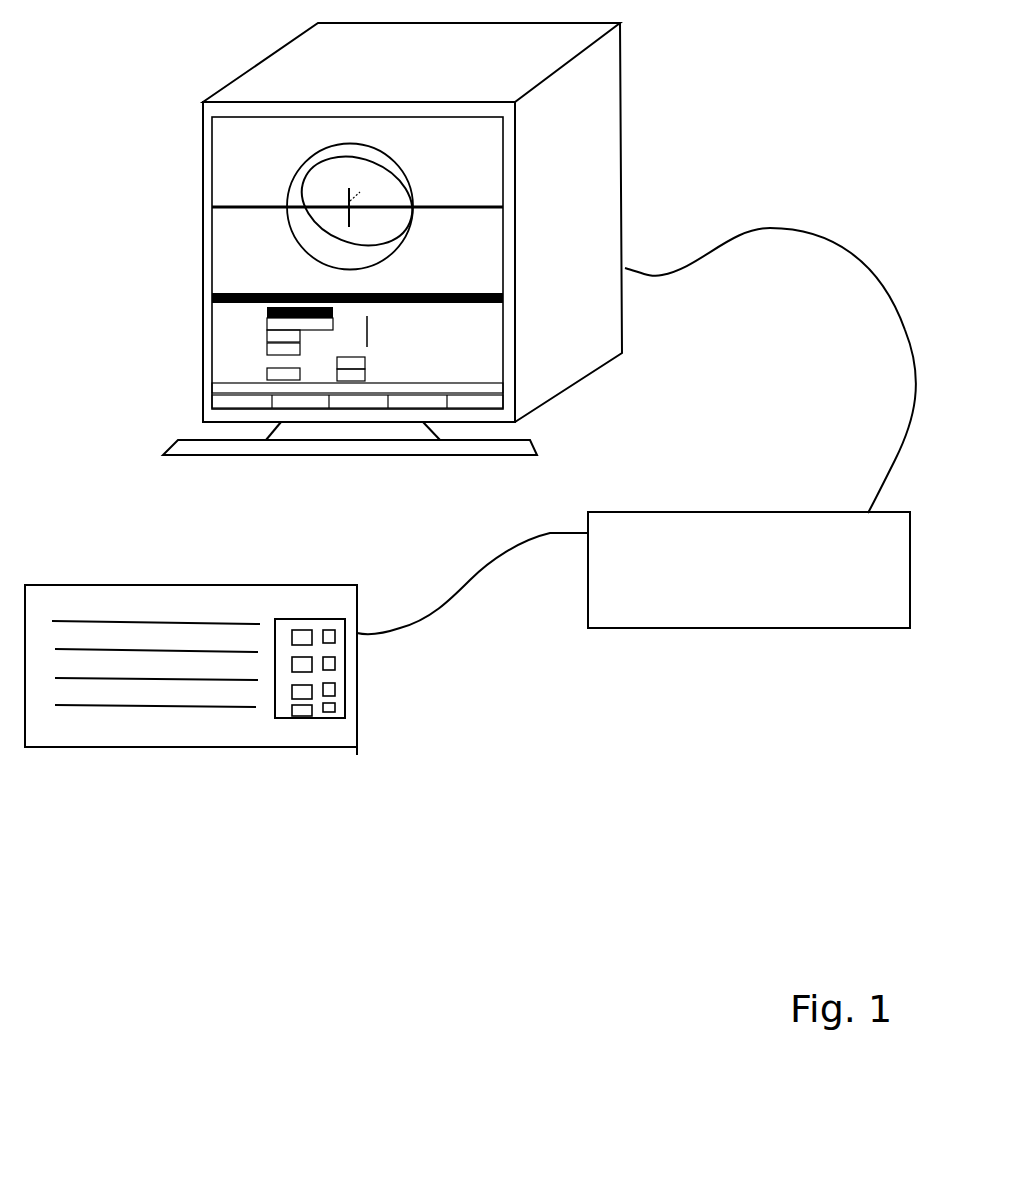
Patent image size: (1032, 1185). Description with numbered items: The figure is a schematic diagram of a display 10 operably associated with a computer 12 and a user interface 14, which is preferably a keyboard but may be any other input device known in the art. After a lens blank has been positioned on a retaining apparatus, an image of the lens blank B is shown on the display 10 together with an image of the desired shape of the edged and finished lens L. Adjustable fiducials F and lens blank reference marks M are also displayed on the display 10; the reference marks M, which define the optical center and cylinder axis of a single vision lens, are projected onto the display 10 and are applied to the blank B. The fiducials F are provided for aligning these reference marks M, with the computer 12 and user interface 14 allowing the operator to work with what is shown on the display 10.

The display 10 is at (344, 239).
The computer 12 is at (718, 644).
The user interface 14 is at (263, 784).
The edged and finished lens L is at (400, 162).
The lens blank B is at (300, 172).
The lens blank reference marks M is at (362, 192).
The adjustable fiducials F is at (357, 221).